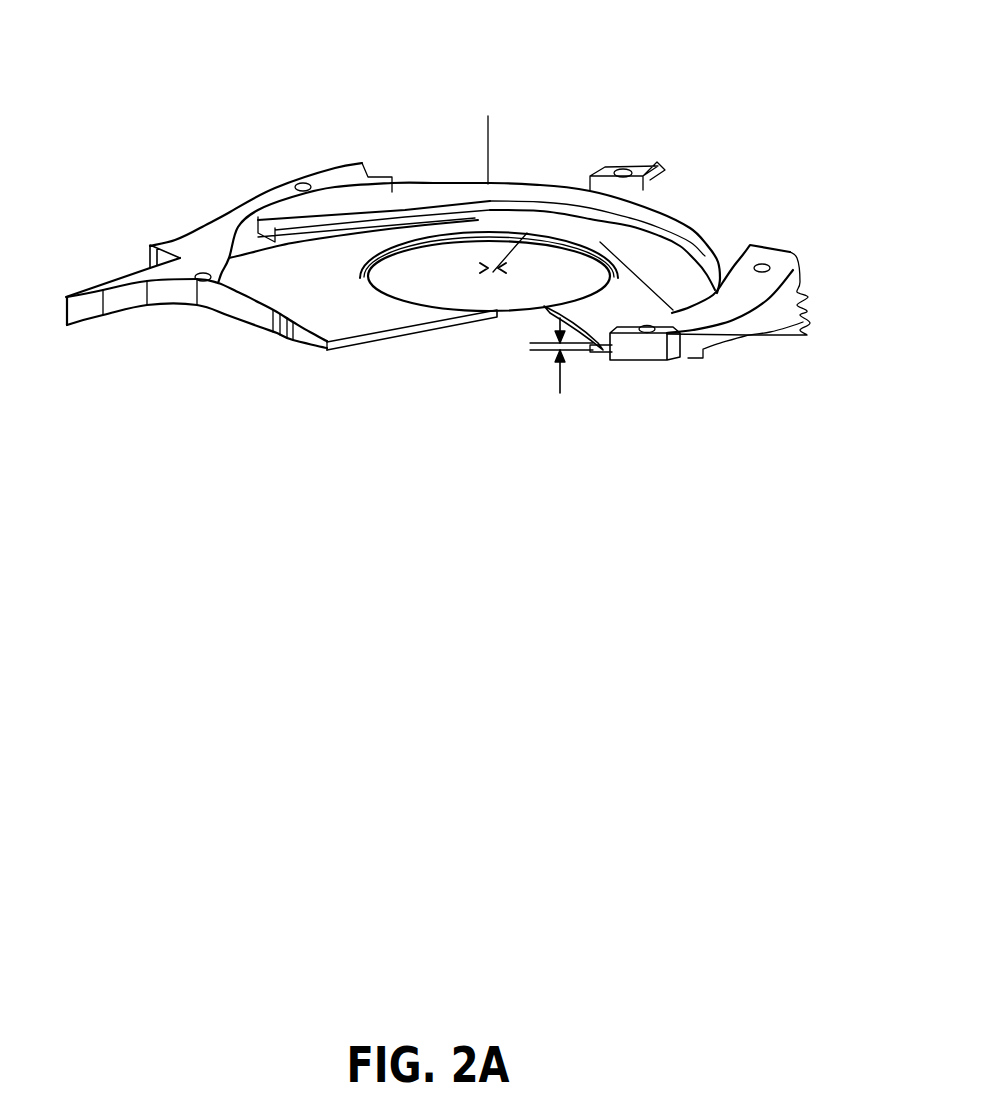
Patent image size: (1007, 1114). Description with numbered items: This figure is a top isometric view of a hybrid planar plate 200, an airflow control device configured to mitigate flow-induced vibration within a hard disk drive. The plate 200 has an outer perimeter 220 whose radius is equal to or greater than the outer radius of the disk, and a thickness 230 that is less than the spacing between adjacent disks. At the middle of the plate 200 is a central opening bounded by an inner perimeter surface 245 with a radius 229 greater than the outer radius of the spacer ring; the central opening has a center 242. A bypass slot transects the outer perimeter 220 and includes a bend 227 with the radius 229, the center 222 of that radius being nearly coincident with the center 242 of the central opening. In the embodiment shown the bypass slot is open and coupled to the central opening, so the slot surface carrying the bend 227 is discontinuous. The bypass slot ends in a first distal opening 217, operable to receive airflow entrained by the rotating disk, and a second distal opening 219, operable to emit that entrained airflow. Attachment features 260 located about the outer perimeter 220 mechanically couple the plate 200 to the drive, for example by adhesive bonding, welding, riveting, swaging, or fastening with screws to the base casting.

The hybrid planar plate 200 is at (678, 132).
The first distal opening 217 is at (692, 350).
The second distal opening 219 is at (145, 267).
The outer perimeter 220 is at (720, 292).
The center 222 is at (493, 272).
The bend 227 is at (522, 233).
The radius 229 is at (507, 264).
The thickness 230 is at (560, 375).
The center 242 is at (542, 376).
The inner perimeter surface 245 is at (470, 239).
The attachment feature 260 is at (303, 187).